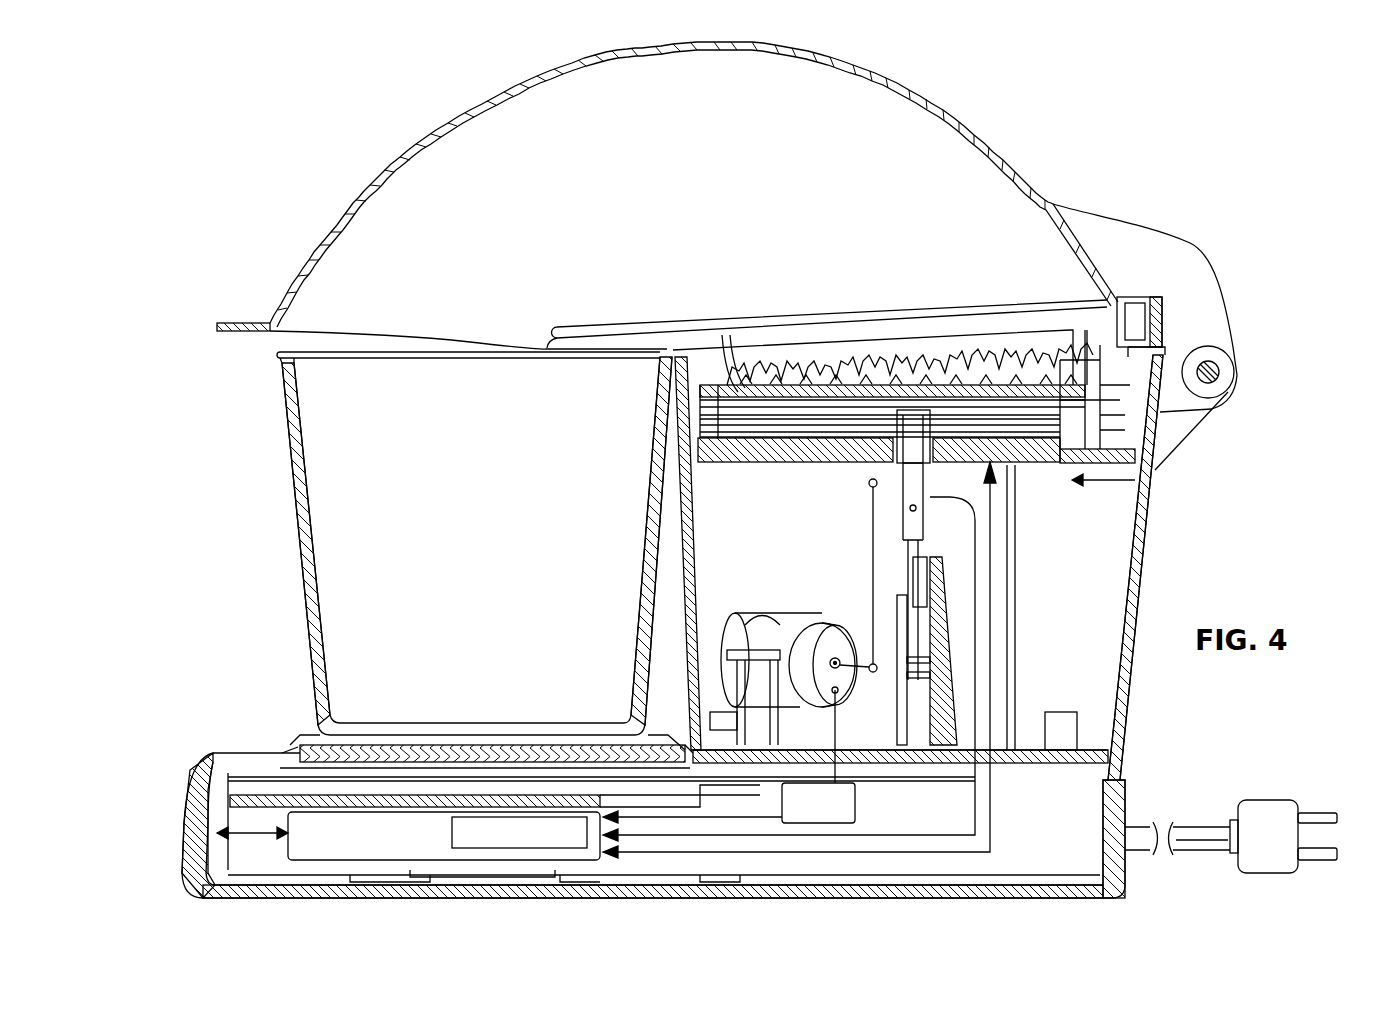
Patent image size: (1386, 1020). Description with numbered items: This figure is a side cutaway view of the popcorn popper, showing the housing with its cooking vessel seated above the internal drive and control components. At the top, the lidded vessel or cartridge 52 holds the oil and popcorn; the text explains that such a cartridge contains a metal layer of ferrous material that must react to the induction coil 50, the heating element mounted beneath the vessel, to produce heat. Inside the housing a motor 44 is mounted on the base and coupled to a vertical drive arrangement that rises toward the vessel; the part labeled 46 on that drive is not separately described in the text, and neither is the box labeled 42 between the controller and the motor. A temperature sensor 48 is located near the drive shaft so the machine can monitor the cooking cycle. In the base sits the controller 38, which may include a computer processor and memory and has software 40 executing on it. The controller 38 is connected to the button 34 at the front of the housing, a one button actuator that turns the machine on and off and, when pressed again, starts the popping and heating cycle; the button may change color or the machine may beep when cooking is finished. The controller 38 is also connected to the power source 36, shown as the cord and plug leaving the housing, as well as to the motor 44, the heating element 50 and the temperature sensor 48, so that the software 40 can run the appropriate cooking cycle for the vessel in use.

The button 34 is at (187, 823).
The power source 36 is at (1207, 823).
The controller 38 is at (400, 856).
The software 40 is at (540, 848).
The variable frequency drive 42 is at (848, 797).
The motor 44 is at (823, 623).
The drive shaft assembly 46 is at (873, 568).
The temperature sensor 48 is at (905, 452).
The induction coil 50 is at (1048, 462).
The cartridge 52 is at (727, 353).